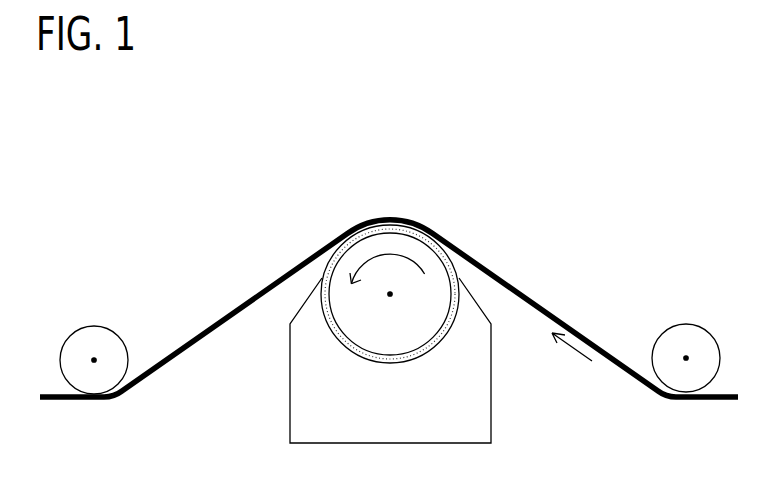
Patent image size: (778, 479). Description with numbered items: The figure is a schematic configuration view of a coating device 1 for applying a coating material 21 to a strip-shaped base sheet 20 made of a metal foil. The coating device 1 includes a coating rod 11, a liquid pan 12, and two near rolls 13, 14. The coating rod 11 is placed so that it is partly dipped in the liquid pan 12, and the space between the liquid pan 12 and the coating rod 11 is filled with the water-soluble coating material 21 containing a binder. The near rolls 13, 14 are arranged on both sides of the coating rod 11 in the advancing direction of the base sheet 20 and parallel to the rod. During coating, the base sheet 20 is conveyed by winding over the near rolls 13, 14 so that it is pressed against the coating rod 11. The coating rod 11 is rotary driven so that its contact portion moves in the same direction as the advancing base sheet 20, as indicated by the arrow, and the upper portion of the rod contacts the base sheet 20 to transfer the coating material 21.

The coating device 1 is at (530, 183).
The coating rod 11 is at (374, 337).
The liquid pan 12 is at (491, 411).
The near roll 13 is at (690, 324).
The near roll 14 is at (100, 326).
The base sheet 20 is at (204, 331).
The coating material 21 is at (305, 281).